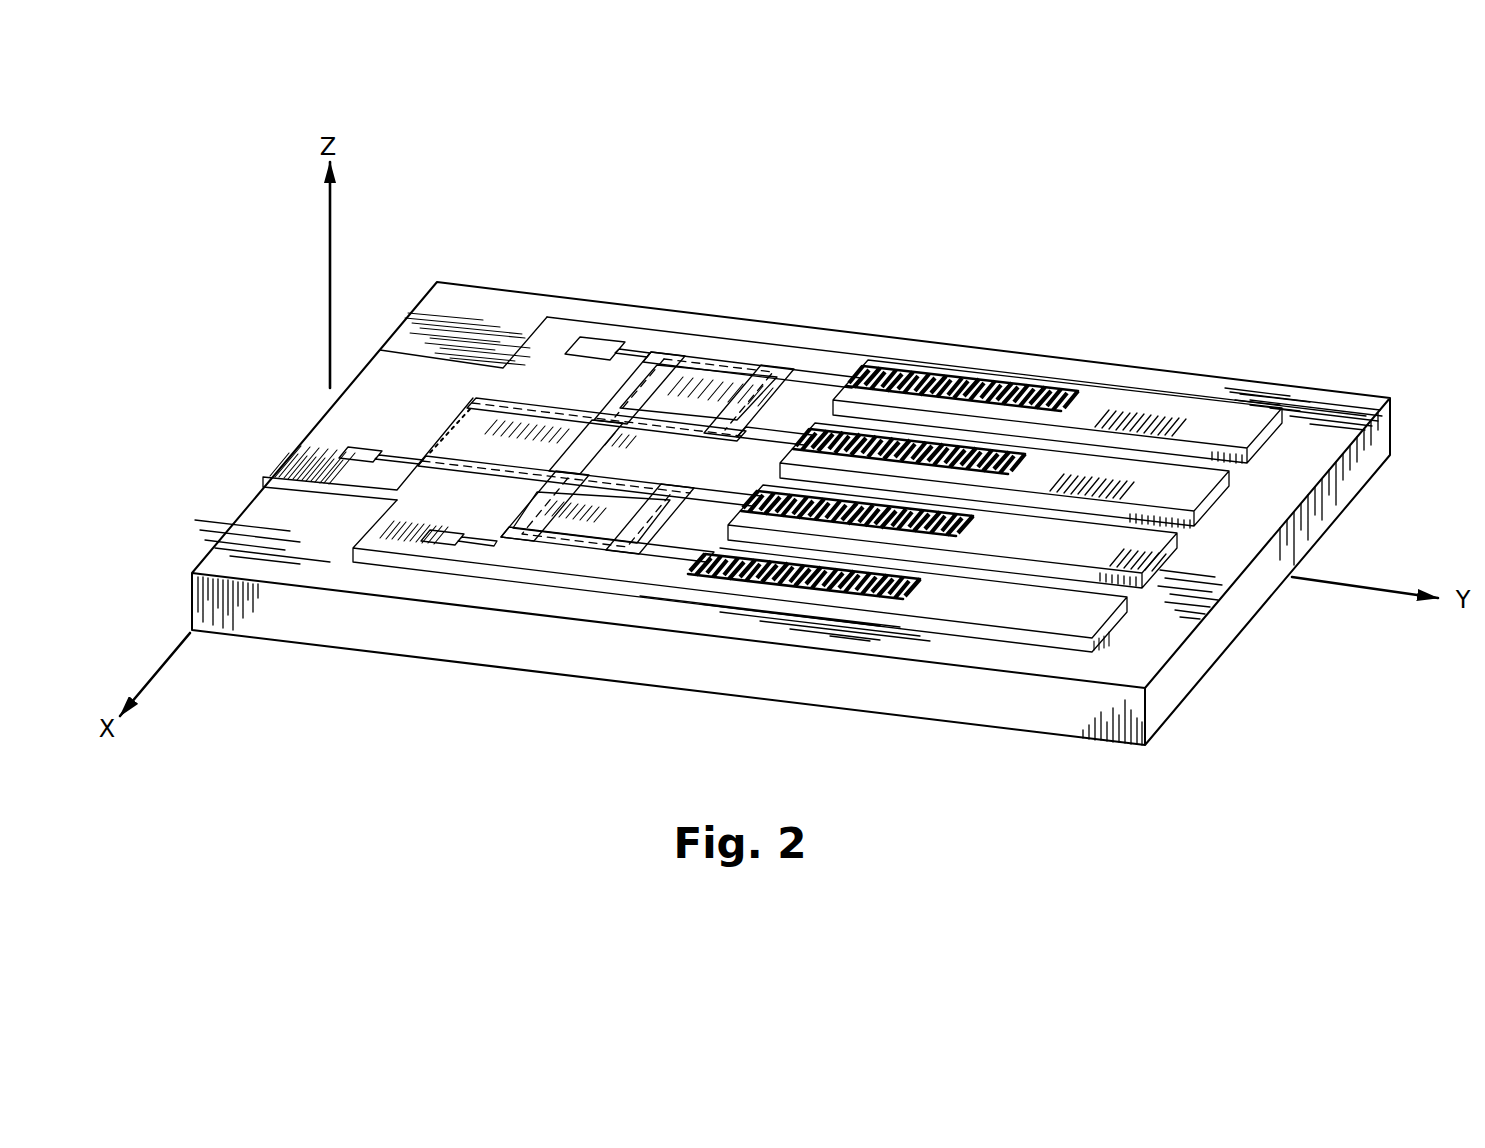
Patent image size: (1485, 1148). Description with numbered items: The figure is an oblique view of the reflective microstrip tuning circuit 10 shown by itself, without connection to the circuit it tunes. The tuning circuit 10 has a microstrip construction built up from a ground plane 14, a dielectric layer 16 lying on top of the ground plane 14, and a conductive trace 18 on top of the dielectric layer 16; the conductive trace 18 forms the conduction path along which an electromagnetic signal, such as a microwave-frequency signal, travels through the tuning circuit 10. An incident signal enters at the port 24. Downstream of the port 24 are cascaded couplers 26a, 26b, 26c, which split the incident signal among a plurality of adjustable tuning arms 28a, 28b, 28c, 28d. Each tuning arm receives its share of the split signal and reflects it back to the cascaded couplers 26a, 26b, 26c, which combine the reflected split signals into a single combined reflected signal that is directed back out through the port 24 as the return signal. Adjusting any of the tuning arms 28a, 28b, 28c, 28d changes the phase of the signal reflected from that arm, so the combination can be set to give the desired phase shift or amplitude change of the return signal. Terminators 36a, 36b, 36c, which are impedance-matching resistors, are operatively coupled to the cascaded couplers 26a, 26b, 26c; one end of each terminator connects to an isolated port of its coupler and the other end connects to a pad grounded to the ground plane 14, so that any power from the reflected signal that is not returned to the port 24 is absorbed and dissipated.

The reflective microstrip tuning circuit 10 is at (420, 248).
The ground plane 14 is at (348, 631).
The dielectric layer 16 is at (441, 571).
The conductive trace 18 is at (474, 550).
The port 24 is at (338, 381).
The cascaded coupler 26a is at (524, 398).
The cascaded coupler 26b is at (712, 352).
The cascaded coupler 26c is at (567, 563).
The adjustable tuning arm 28a is at (1042, 465).
The adjustable tuning arm 28b is at (1090, 388).
The adjustable tuning arm 28c is at (978, 545).
The adjustable tuning arm 28d is at (918, 606).
The terminator 36a is at (398, 452).
The terminator 36b is at (612, 347).
The terminator 36c is at (446, 533).